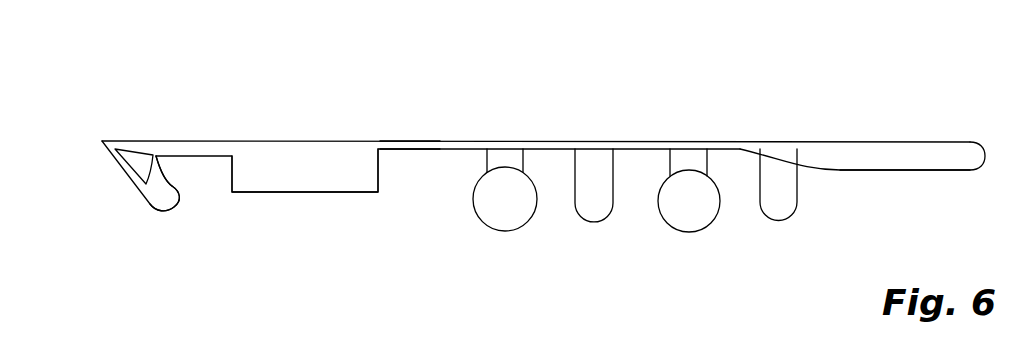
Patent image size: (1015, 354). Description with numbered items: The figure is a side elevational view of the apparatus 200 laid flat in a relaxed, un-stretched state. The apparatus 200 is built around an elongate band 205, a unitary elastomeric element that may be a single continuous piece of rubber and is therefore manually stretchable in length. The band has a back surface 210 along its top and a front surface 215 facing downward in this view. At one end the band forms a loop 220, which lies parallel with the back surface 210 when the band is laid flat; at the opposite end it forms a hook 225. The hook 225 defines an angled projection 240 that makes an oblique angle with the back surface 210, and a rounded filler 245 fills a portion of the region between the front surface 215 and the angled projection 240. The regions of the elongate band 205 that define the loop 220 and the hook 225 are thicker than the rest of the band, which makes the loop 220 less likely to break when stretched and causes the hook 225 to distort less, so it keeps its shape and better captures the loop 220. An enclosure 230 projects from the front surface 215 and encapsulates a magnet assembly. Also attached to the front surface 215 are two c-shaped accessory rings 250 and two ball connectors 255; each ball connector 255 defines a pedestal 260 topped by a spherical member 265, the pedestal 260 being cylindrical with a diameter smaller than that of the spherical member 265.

The apparatus 200 is at (568, 117).
The elongate band 205 is at (741, 139).
The back surface 210 is at (408, 141).
The front surface 215 is at (410, 150).
The loop 220 is at (917, 172).
The hook 225 is at (142, 213).
The enclosure 230 is at (301, 193).
The angled projection 240 is at (134, 187).
The rounded filler 245 is at (151, 169).
The accessory ring 250 is at (776, 214).
The ball connector 255 is at (672, 239).
The pedestal 260 is at (672, 162).
The spherical member 265 is at (663, 203).